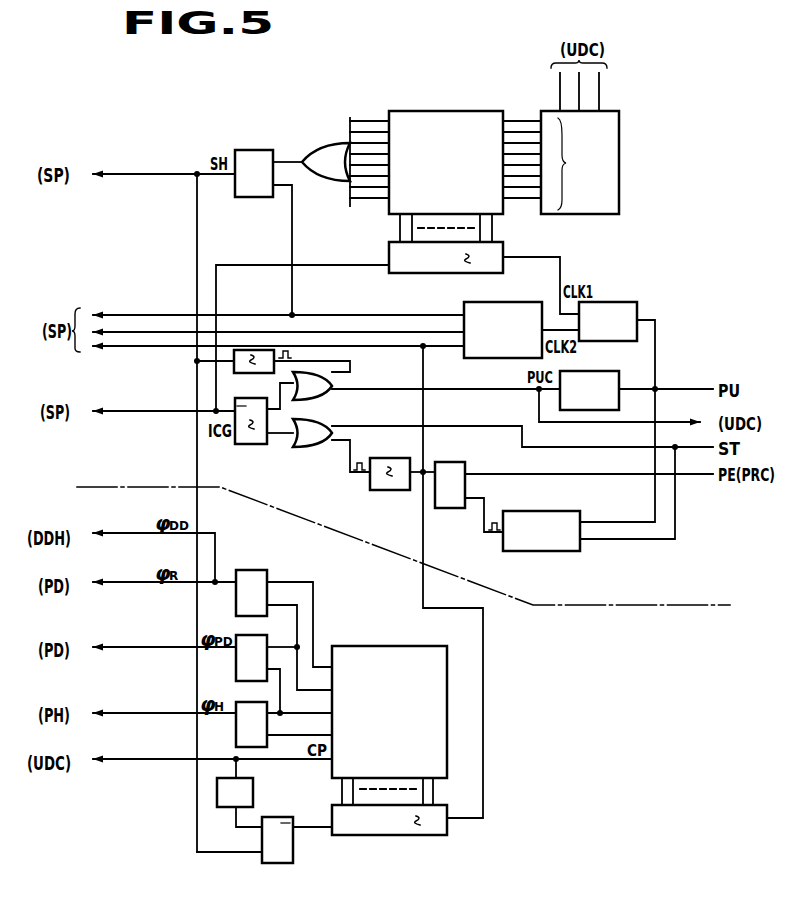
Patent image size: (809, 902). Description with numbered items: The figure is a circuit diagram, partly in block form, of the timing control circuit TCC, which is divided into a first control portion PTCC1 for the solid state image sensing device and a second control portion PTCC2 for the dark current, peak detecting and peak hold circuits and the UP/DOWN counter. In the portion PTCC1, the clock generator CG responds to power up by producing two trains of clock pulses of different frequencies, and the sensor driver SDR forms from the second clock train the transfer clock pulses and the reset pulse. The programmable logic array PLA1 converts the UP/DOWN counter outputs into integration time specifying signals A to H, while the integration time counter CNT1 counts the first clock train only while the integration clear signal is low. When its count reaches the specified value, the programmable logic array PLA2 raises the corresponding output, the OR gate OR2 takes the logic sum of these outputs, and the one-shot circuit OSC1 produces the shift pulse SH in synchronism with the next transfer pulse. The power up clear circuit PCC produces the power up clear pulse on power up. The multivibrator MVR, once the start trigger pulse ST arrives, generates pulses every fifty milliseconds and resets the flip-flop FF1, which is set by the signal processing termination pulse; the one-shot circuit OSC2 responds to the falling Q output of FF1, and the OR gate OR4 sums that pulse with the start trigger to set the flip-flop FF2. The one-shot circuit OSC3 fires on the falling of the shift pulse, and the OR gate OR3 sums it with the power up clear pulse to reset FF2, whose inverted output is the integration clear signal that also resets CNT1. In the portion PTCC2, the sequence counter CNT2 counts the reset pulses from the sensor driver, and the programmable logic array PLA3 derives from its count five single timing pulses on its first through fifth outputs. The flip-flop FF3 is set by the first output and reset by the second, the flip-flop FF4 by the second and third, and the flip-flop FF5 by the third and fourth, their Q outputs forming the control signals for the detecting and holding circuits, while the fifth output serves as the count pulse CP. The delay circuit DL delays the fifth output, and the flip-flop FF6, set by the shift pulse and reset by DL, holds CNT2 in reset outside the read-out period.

The timing control circuit TCC is at (184, 99).
The one-shot circuit OSC1 is at (254, 151).
The OR gate OR2 is at (341, 172).
The programmable logic array PLA2 is at (460, 175).
The programmable logic array PLA1 is at (610, 203).
The integration time counter CNT1 is at (458, 270).
The sensor driver SDR is at (524, 342).
The clock generator CG is at (618, 332).
The power up clear circuit PCC is at (600, 401).
The RS flip-flop FF1 is at (452, 466).
The multivibrator MVR is at (552, 533).
The one-shot circuit OSC3 is at (250, 371).
The OR gate OR3 is at (320, 398).
The OR gate OR4 is at (322, 445).
The RS flip-flop FF2 is at (249, 434).
The one-shot circuit OSC2 is at (390, 462).
The control portion PTCC1 is at (669, 592).
The control portion PTCC2 is at (669, 641).
The RS flip-flop FF3 is at (236, 605).
The RS flip-flop FF4 is at (236, 670).
The RS flip-flop FF5 is at (236, 737).
The delay circuit DL is at (244, 803).
The RS flip-flop FF6 is at (293, 849).
The programmable logic array PLA3 is at (408, 723).
The sequence counter CNT2 is at (389, 820).